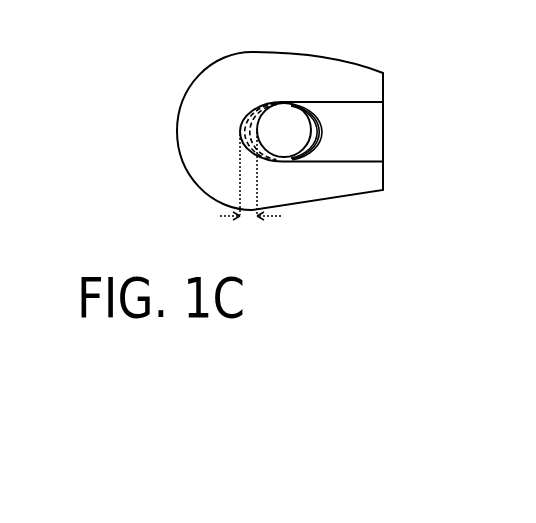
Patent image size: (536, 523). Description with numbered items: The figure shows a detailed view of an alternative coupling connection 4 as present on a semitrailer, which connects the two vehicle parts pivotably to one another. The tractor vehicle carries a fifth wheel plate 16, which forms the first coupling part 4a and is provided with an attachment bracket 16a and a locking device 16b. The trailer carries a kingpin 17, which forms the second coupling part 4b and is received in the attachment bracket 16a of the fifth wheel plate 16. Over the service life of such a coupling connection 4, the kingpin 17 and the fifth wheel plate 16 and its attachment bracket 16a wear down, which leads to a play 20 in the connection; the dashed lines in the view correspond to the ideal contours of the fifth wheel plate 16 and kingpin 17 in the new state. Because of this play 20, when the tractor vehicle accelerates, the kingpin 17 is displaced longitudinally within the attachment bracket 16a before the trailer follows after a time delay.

The fifth wheel plate 16 is at (272, 106).
The first coupling part 4a is at (220, 80).
The attachment bracket 16a is at (328, 118).
The locking device 16b is at (321, 136).
The kingpin 17 is at (362, 179).
The second coupling part 4b is at (290, 137).
The coupling connection 4 is at (415, 165).
The play 20 is at (251, 222).